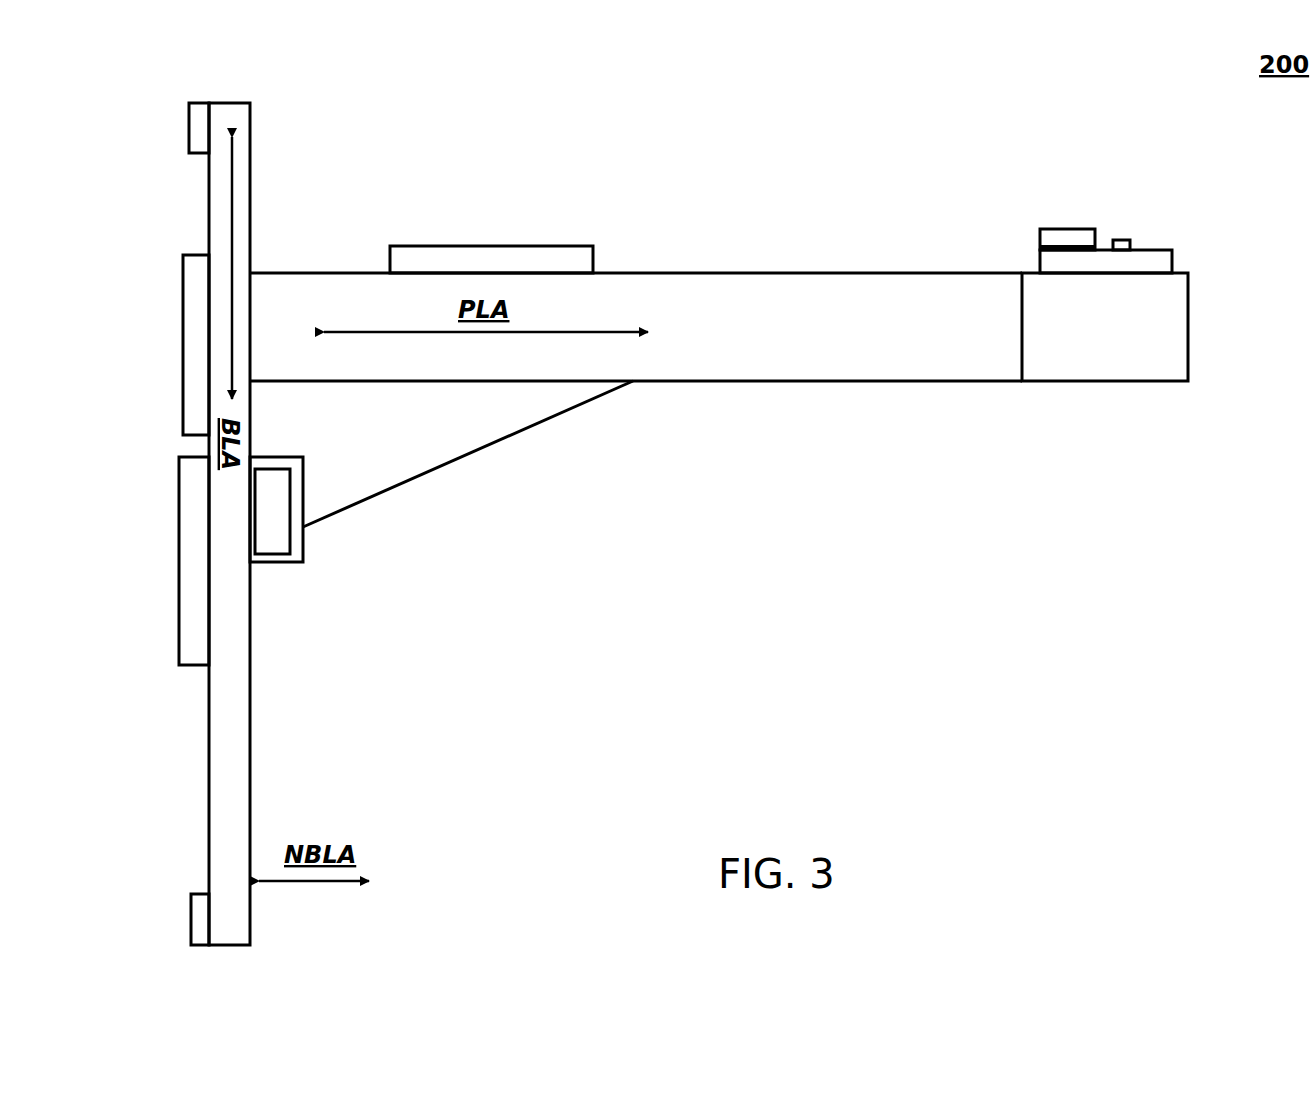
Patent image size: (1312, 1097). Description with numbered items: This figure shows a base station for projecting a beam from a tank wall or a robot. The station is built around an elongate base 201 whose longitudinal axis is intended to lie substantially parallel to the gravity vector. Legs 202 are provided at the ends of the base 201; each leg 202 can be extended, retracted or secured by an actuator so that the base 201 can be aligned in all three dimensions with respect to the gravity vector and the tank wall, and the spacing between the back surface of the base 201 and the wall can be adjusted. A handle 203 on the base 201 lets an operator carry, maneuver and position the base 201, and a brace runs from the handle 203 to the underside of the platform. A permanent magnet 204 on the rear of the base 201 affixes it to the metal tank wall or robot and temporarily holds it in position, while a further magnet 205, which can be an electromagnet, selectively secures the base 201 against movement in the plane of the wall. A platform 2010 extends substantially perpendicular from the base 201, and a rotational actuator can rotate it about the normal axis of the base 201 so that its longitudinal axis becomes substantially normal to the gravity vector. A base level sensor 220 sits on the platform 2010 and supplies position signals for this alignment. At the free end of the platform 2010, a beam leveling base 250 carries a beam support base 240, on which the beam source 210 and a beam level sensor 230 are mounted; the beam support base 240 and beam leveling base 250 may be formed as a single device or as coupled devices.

The base 201 is at (240, 667).
The legs 202 is at (195, 103).
The handle 203 is at (297, 540).
The permanent magnet 204 is at (194, 347).
The magnet 205 is at (195, 650).
The platform 2010 is at (715, 335).
The base level sensor 220 is at (515, 246).
The beam level sensor 230 is at (1072, 235).
The beam source 210 is at (1128, 240).
The beam support base 240 is at (1148, 256).
The beam leveling base 250 is at (1115, 352).